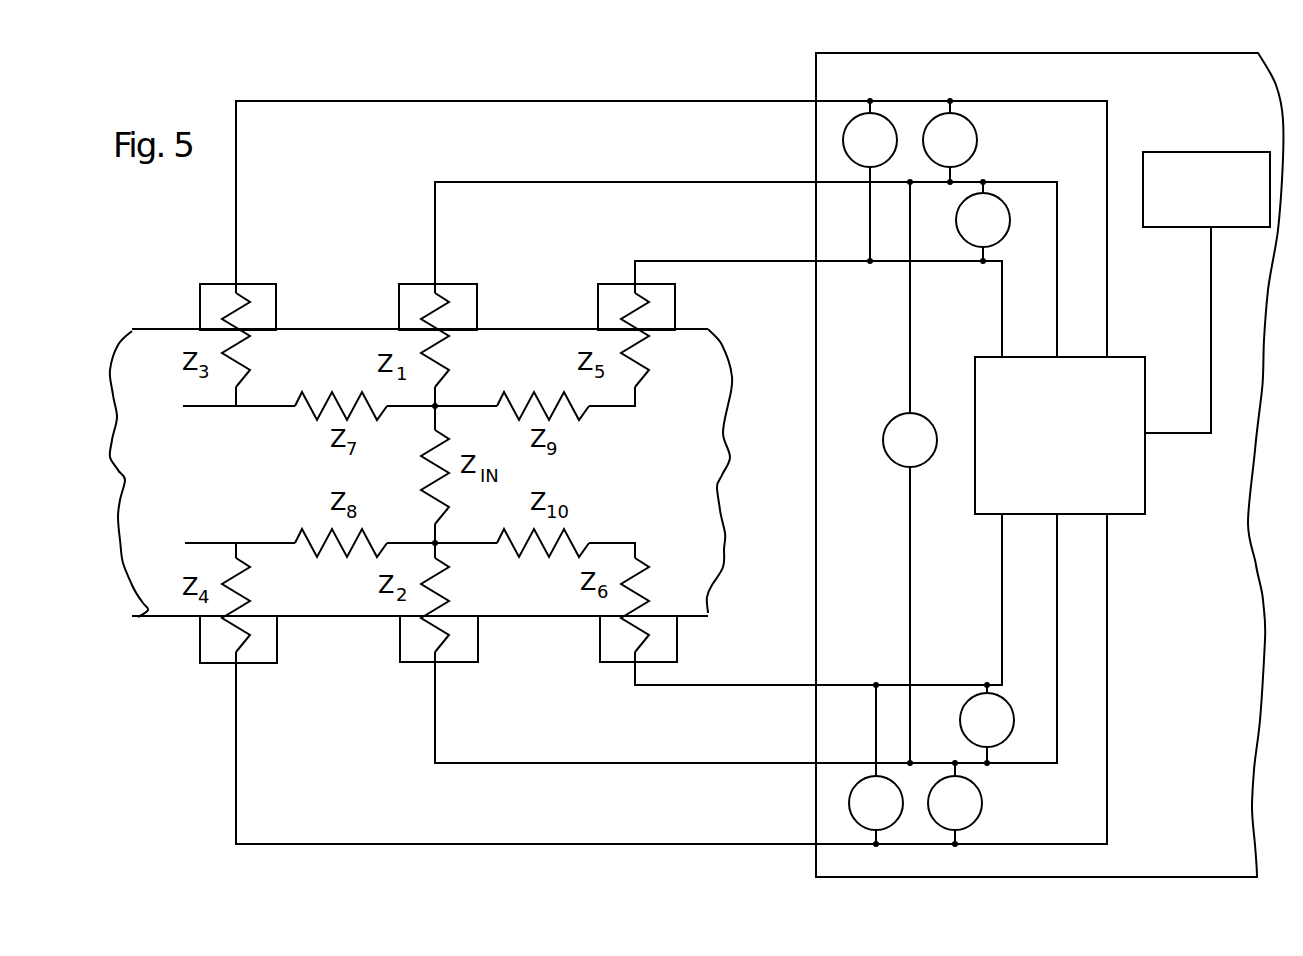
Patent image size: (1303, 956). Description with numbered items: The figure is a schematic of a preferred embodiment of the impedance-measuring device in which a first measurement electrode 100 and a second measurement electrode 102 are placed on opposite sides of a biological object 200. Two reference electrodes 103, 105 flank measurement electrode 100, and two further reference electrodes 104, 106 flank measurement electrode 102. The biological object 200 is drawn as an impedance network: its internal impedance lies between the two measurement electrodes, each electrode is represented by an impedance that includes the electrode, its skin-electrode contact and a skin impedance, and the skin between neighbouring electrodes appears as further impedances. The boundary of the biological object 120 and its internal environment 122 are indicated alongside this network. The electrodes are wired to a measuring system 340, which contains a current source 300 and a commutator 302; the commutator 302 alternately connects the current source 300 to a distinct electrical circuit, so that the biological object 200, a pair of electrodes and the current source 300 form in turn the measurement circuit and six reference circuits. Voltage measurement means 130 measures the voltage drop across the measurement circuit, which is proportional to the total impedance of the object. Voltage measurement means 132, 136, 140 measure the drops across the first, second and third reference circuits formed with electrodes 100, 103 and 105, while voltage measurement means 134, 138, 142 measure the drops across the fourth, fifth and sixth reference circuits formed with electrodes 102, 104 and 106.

The first measurement electrode 100 is at (403, 318).
The second measurement electrode 102 is at (407, 645).
The reference electrode 103 is at (203, 318).
The reference electrode 104 is at (210, 647).
The reference electrode 105 is at (602, 318).
The reference electrode 106 is at (602, 644).
The skin surface of biological object 120 is at (140, 618).
The internal environment 122 is at (698, 415).
The voltage measurement means 130 is at (892, 463).
The voltage measurement means 132 is at (935, 112).
The voltage measurement means 134 is at (982, 800).
The voltage measurement means 136 is at (1003, 198).
The voltage measurement means 138 is at (1010, 700).
The voltage measurement means 140 is at (843, 140).
The voltage measurement means 142 is at (848, 803).
The biological object 200 is at (147, 352).
The current source 300 is at (1190, 158).
The commutator 302 is at (1118, 487).
The measuring system 340 is at (933, 72).